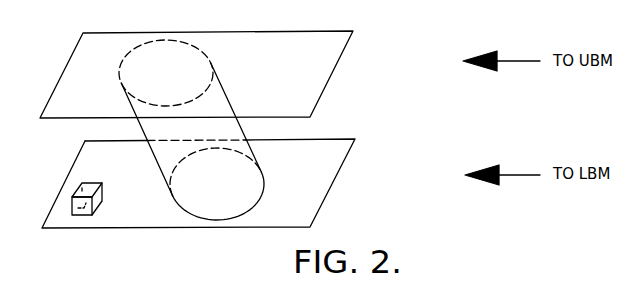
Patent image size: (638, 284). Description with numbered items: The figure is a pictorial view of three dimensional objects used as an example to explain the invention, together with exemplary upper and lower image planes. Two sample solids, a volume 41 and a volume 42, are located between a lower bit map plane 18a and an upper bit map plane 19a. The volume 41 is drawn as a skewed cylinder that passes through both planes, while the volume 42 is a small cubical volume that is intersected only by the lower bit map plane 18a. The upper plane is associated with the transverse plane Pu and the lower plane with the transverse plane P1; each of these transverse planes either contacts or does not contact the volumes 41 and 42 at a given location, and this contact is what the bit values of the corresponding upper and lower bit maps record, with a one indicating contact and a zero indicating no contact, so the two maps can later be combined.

The upper bit map plane 19a is at (348, 42).
The upper transverse plane Pu is at (310, 91).
The lower bit map plane 18a is at (347, 159).
The lower transverse plane P1 is at (310, 202).
The skewed cylinder volume 41 is at (140, 130).
The cubical volume 42 is at (75, 188).